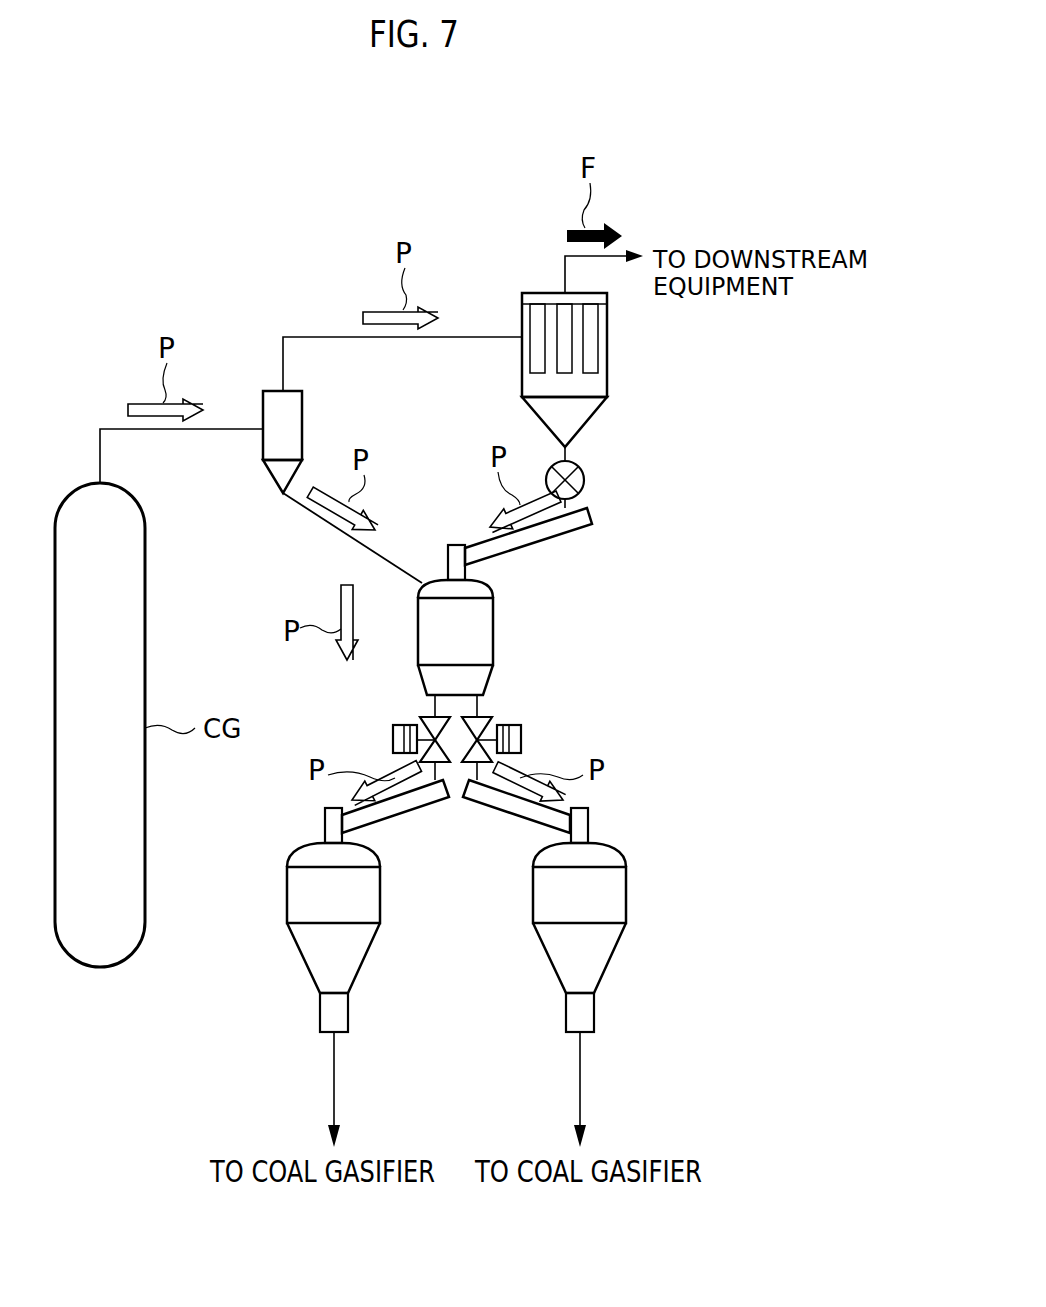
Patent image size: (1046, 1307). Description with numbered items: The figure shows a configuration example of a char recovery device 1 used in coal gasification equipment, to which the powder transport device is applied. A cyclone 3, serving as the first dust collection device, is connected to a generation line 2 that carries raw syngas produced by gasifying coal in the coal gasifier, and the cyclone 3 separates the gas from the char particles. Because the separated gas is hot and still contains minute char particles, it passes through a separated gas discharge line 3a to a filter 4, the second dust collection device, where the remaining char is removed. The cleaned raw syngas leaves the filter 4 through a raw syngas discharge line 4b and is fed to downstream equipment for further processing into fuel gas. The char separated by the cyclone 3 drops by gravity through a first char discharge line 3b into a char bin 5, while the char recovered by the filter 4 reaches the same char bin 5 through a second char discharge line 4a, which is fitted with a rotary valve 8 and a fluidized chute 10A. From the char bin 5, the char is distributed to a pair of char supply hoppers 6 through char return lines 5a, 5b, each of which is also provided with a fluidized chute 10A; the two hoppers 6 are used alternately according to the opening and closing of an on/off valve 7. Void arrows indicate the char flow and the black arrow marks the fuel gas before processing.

The char recovery device 1 is at (666, 188).
The generation line 2 is at (100, 458).
The cyclone 3 is at (302, 411).
The separated gas discharge line 3a is at (315, 337).
The first char discharge line 3b is at (318, 517).
The filter 4 is at (607, 343).
The second char discharge line 4a is at (567, 452).
The raw syngas discharge line 4b is at (563, 271).
The char bin 5 is at (493, 645).
The char return line 5a is at (480, 706).
The char return line 5b is at (435, 706).
The char supply hopper 6 is at (287, 893).
The on/off valve 7 is at (393, 739).
The rotary valve 8 is at (585, 480).
The fluidized chute 10A is at (552, 540).